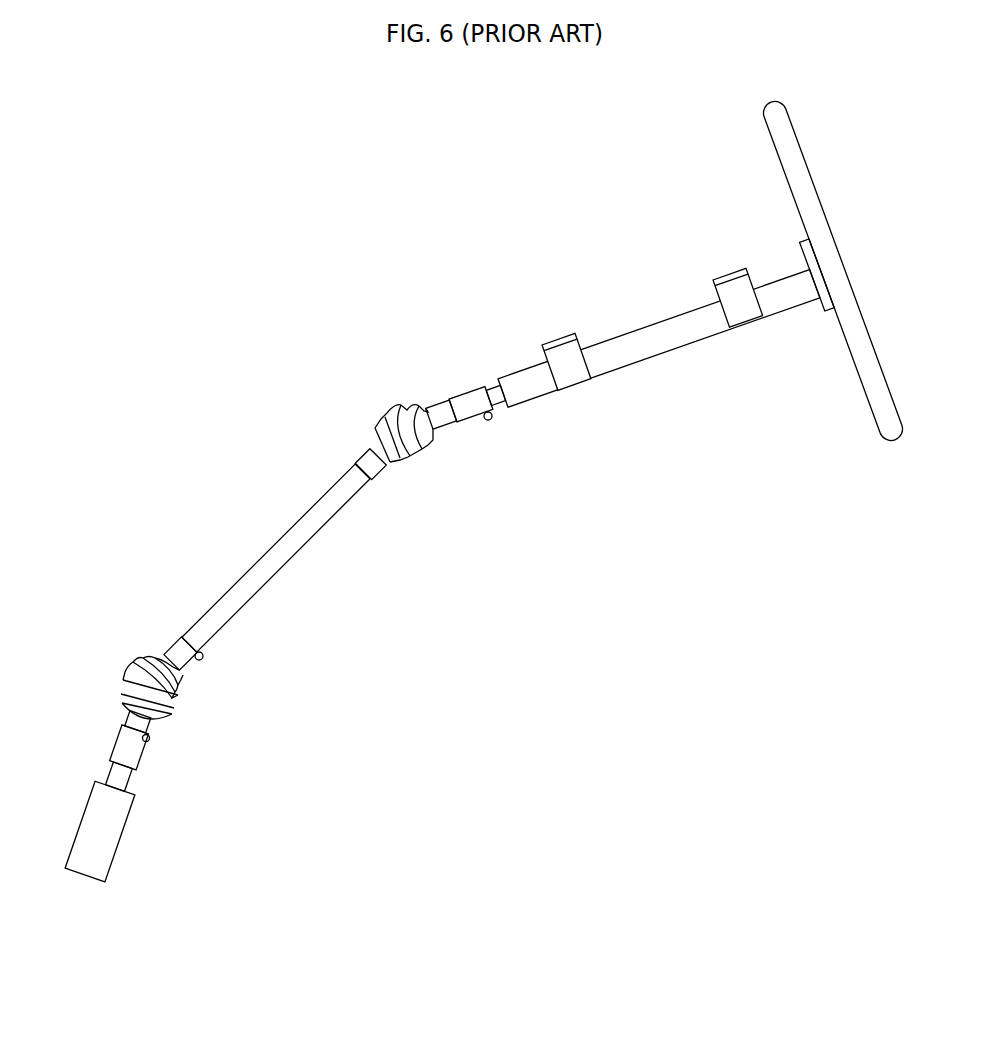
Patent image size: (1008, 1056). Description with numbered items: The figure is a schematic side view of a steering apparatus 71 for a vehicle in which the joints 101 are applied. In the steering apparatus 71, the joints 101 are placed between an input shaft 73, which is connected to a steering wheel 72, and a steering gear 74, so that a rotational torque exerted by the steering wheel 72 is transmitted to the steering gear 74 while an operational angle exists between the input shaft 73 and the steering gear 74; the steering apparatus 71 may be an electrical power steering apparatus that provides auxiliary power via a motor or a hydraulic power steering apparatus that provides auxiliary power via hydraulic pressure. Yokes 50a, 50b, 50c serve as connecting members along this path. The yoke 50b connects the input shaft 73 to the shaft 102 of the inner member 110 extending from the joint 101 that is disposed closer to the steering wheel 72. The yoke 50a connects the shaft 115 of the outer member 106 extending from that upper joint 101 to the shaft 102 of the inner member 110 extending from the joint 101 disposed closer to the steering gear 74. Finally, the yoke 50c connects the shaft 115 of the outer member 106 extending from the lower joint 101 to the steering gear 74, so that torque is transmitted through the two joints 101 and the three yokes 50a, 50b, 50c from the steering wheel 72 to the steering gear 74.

The steering apparatus 71 is at (256, 366).
The steering wheel 72 is at (803, 168).
The input shaft 73 is at (652, 349).
The steering gear 74 is at (109, 850).
The yoke 50a is at (244, 584).
The yoke 50b is at (478, 426).
The yoke 50c is at (137, 771).
The joint 101 is at (397, 405).
The shaft of inner member 102 is at (438, 407).
The outer member 106 is at (364, 446).
The inner member 110 is at (444, 438).
The shaft of outer member 115 is at (378, 478).